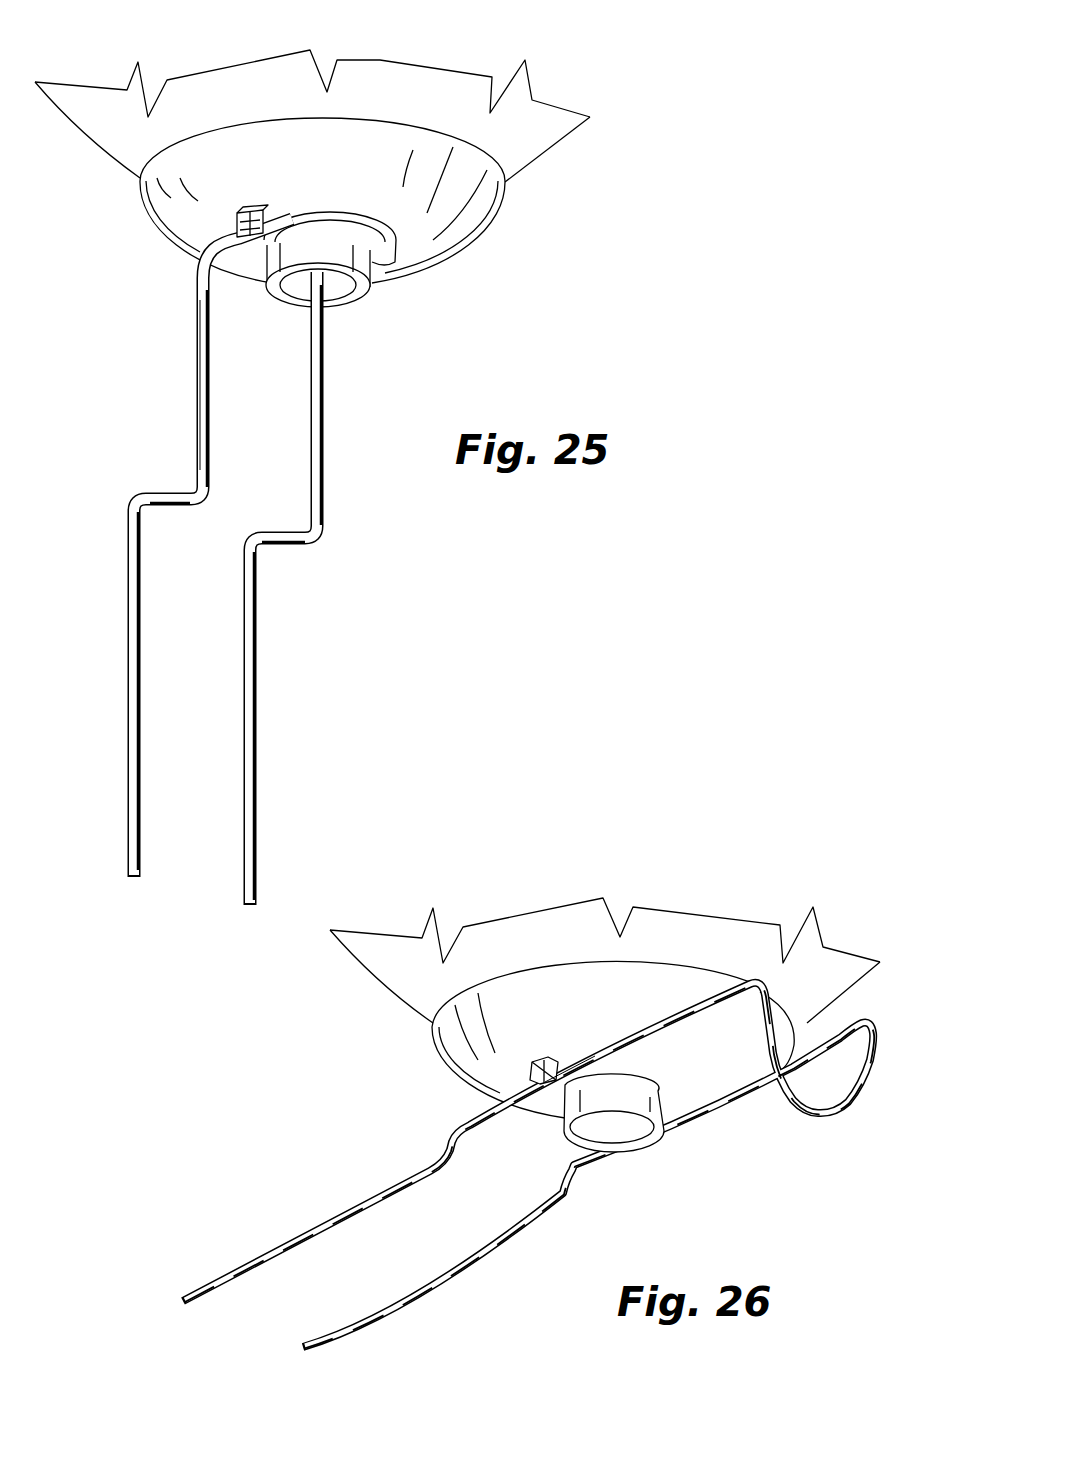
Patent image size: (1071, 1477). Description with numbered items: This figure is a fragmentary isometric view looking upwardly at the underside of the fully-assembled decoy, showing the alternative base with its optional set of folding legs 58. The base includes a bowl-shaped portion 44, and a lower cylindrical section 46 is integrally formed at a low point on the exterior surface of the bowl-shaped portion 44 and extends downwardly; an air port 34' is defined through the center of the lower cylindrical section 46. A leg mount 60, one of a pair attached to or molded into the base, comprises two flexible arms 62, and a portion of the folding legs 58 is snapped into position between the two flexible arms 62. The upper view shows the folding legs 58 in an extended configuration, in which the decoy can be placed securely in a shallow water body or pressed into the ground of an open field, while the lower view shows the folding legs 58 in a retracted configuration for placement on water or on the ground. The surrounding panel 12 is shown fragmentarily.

In FIG. 25, the housing panel 12 is at (523, 157).
In FIG. 26, the housing panel 12 is at (397, 963).
In FIG. 25, the bowl-shaped portion 44 is at (447, 210).
In FIG. 26, the bowl-shaped portion 44 is at (613, 1000).
In FIG. 25, the lower cylindrical section 46 is at (400, 277).
In FIG. 26, the lower cylindrical section 46 is at (627, 1103).
In FIG. 25, the air port 34' is at (361, 317).
In FIG. 26, the air port 34' is at (658, 1155).
In FIG. 25, the folding legs 58 is at (130, 736).
In FIG. 26, the folding legs 58 is at (450, 1273).
In FIG. 25, the leg mount 60 is at (257, 204).
In FIG. 26, the leg mount 60 is at (527, 1068).
In FIG. 25, the flexible arms 62 is at (167, 232).
In FIG. 26, the flexible arms 62 is at (537, 1058).